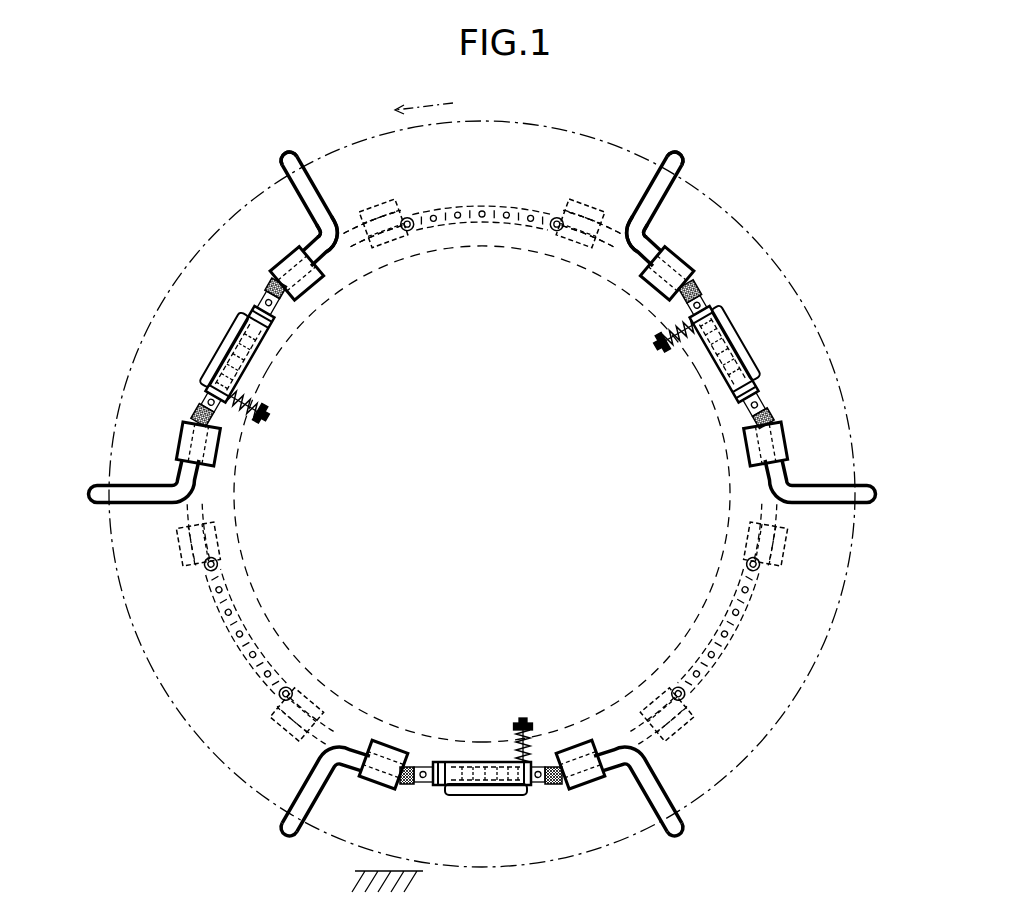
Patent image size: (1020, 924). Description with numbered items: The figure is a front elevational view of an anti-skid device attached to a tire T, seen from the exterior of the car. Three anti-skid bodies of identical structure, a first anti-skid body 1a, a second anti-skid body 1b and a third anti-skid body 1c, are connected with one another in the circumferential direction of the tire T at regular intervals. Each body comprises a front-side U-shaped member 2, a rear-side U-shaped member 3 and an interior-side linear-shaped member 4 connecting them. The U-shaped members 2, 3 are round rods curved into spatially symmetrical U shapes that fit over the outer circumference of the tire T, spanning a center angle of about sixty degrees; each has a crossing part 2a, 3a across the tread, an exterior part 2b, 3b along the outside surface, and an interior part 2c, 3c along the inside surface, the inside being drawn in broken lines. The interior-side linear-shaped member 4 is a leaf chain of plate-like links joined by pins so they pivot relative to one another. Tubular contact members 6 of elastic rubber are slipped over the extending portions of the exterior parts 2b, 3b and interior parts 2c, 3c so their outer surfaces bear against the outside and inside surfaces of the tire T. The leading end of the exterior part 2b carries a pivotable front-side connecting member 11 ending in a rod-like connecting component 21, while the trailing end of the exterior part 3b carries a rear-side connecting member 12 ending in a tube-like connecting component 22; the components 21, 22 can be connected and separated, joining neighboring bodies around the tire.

The tire T is at (207, 237).
The first anti-skid body 1a is at (556, 180).
The second anti-skid body 1b is at (745, 686).
The third anti-skid body 1c is at (218, 691).
The front-side U-shaped member 2 is at (318, 178).
The crossing part 2a is at (289, 151).
The exterior part 2b is at (325, 238).
The interior part 2c is at (350, 240).
The rear-side U-shaped member 3 is at (655, 176).
The crossing part 3a is at (674, 150).
The exterior part 3b is at (647, 237).
The interior part 3c is at (617, 232).
The interior-side linear-shaped member 4 is at (480, 225).
The contact member 6 is at (383, 250).
The front-side connecting member 11 is at (267, 293).
The rear-side connecting member 12 is at (200, 402).
The rod-like connecting component 21 is at (483, 540).
The tube-like connecting component 22 is at (250, 350).